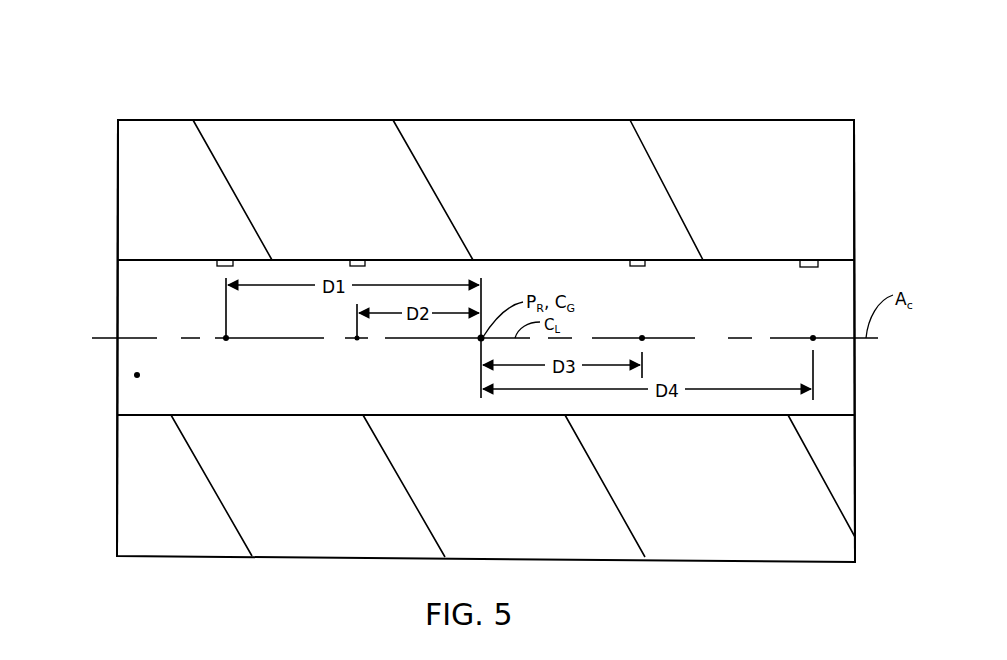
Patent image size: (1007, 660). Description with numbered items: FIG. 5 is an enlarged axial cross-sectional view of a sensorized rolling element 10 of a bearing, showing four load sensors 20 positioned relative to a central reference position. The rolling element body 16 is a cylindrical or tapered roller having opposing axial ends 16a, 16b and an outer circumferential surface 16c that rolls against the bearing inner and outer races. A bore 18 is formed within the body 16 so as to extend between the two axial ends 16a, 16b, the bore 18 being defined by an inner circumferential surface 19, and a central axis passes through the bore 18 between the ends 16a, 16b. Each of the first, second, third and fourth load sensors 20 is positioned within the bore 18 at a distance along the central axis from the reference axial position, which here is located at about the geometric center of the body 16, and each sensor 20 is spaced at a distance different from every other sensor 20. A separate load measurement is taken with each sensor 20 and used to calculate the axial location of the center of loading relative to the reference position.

The rolling element 10 is at (280, 72).
The rolling element body 16 is at (116, 485).
The axial end 16a is at (118, 180).
The axial end 16b is at (853, 188).
The outer circumferential surface 16c is at (753, 120).
The bore 18 is at (134, 375).
The inner circumferential surface 19 is at (263, 415).
The load sensors 20 is at (226, 260).